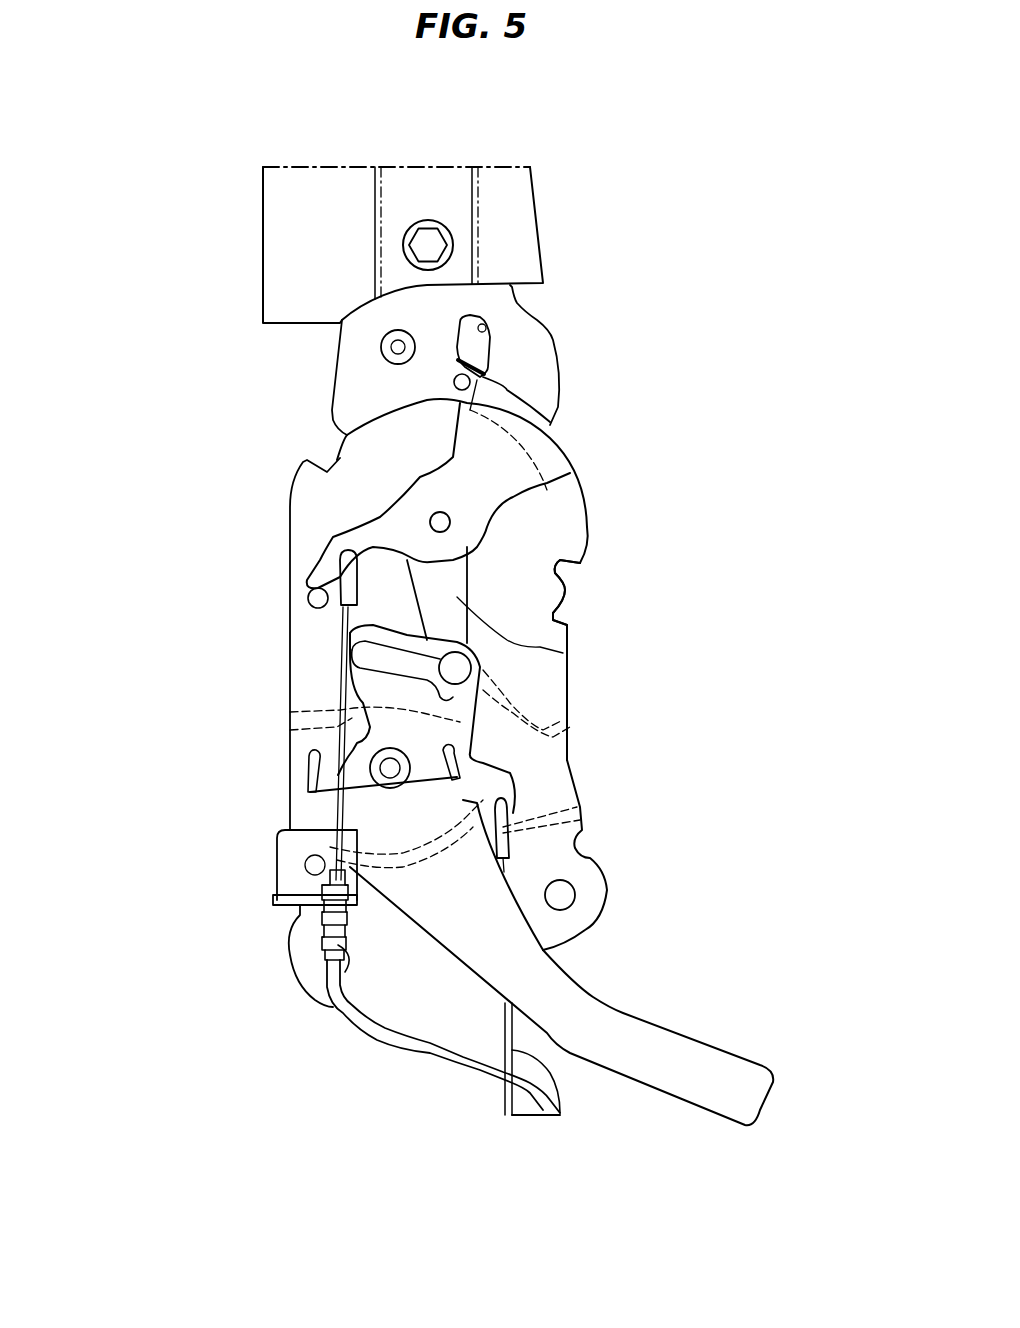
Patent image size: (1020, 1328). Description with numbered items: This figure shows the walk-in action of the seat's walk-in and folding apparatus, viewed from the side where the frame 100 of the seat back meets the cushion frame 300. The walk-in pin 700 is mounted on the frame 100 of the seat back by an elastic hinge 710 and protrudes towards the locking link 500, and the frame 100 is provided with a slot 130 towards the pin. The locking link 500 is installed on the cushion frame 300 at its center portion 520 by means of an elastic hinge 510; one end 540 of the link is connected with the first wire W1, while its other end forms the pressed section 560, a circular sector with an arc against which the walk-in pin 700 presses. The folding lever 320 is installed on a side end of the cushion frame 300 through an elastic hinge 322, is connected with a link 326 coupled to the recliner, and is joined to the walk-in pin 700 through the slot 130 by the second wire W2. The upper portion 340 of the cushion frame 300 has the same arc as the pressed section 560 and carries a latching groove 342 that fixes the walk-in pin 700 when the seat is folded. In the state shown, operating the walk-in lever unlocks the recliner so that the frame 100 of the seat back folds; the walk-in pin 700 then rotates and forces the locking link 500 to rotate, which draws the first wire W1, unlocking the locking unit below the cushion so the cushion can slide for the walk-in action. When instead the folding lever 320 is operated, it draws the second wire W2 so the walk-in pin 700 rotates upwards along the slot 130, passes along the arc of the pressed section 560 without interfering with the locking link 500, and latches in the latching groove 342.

The frame of the seat back 100 is at (533, 340).
The slot 130 is at (477, 317).
The cushion frame 300 is at (540, 688).
The folding lever 320 is at (673, 1050).
The elastic hinge 322 is at (388, 768).
The link 326 is at (540, 653).
The upper portion of the cushion frame 340 is at (567, 510).
The latching groove 342 is at (567, 582).
The locking link 500 is at (271, 460).
The elastic hinge 510 is at (448, 527).
The center portion 520 is at (370, 547).
The one end of the locking link 540 is at (338, 573).
The pressed section 560 is at (555, 460).
The walk-in pin 700 is at (460, 378).
The elastic hinge 710 is at (392, 347).
The first wire W1 is at (447, 1057).
The second wire W2 is at (558, 1115).